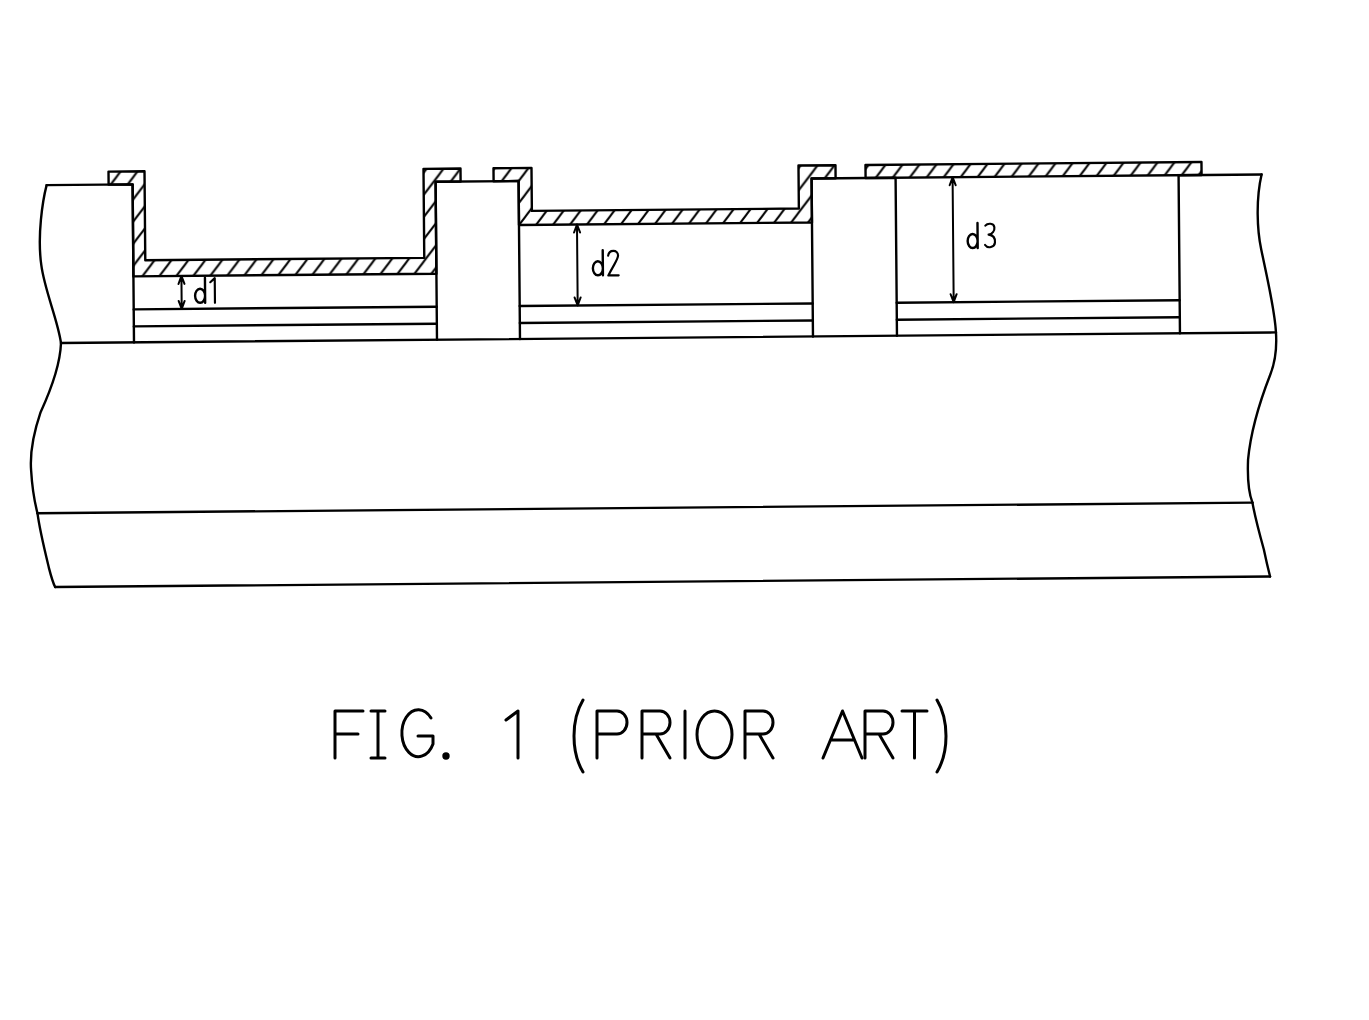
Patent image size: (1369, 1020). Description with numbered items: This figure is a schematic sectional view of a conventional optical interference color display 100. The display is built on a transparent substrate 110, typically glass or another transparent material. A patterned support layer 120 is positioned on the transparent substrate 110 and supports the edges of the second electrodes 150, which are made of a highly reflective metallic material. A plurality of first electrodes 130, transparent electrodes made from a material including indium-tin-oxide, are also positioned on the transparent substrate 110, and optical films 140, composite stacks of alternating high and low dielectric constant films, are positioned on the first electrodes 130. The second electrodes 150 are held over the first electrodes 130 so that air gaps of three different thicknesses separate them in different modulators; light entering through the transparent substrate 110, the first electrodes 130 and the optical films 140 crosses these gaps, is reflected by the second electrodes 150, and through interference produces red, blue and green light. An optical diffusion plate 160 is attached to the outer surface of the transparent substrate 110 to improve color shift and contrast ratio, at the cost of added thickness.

The optical interference color display 100 is at (698, 403).
The transparent substrate 110 is at (1295, 466).
The patterned support layer 120 is at (1308, 245).
The first electrodes 130 is at (1325, 356).
The optical films 140 is at (1314, 289).
The second electrodes 150 is at (1196, 125).
The optical diffusion plate 160 is at (1316, 563).